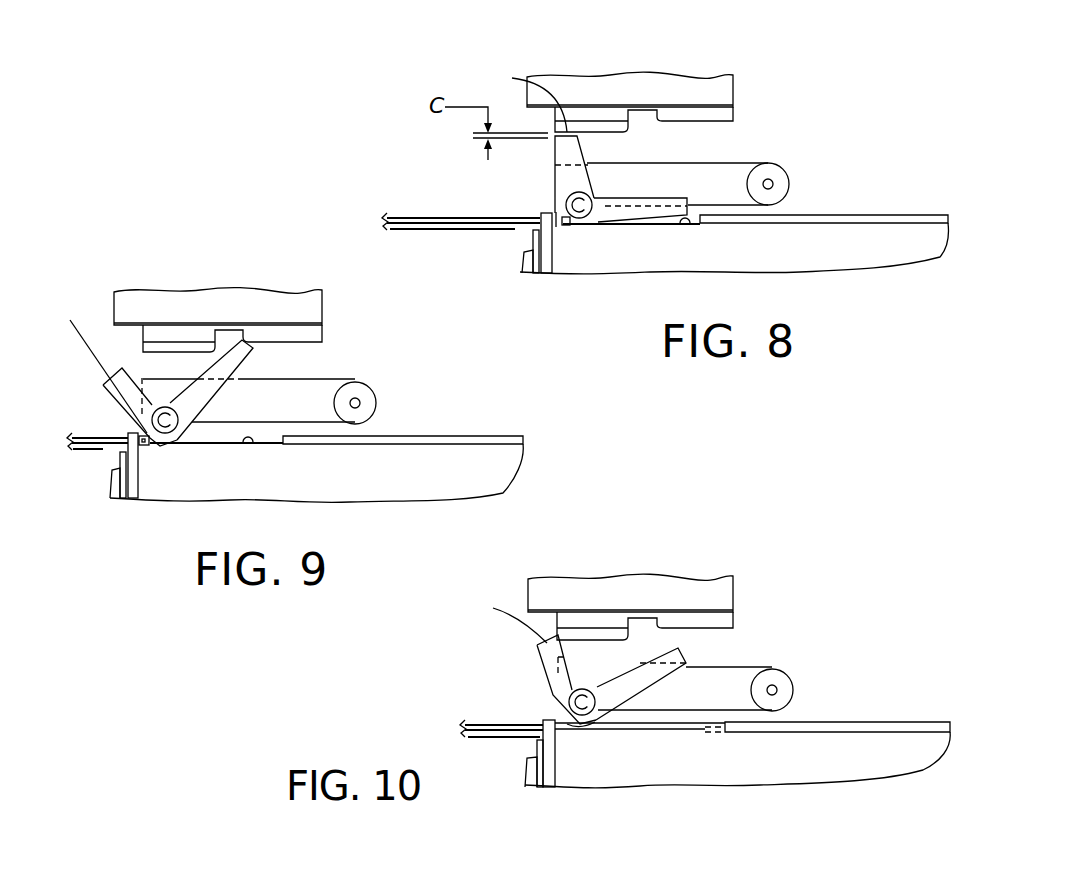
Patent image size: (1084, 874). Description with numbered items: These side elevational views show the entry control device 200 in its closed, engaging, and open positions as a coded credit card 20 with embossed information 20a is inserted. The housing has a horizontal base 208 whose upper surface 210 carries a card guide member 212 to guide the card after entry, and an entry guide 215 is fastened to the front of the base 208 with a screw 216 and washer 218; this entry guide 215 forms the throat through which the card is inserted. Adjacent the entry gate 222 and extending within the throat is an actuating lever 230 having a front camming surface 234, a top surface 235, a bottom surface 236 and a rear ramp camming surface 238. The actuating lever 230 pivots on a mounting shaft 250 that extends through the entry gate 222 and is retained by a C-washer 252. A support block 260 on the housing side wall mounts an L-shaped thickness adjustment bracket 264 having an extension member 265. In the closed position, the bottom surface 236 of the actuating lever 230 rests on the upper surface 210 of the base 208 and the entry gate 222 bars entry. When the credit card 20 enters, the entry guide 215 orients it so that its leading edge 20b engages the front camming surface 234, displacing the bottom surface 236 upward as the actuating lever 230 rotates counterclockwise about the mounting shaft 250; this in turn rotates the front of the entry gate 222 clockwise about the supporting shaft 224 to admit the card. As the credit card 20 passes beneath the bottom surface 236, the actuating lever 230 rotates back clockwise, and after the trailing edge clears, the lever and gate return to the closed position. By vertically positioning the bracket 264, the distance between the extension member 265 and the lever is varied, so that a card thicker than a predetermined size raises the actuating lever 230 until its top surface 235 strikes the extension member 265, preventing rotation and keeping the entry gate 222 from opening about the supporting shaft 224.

In FIG. 8, the coded credit card 20 is at (440, 216).
In FIG. 9, the coded credit card 20 is at (97, 437).
In FIG. 10, the coded credit card 20 is at (470, 722).
In FIG. 8, the embossed information 20a is at (462, 232).
In FIG. 9, the embossed information 20a is at (93, 455).
In FIG. 10, the embossed information 20a is at (502, 739).
In FIG. 8, the leading edge 20b is at (563, 222).
In FIG. 9, the leading edge 20b is at (155, 448).
In FIG. 10, the leading edge 20b is at (728, 730).
In FIG. 8, the entry control device 200 is at (810, 112).
In FIG. 9, the entry control device 200 is at (270, 265).
In FIG. 10, the entry control device 200 is at (803, 623).
In FIG. 8, the horizontal base 208 is at (838, 257).
In FIG. 9, the horizontal base 208 is at (400, 477).
In FIG. 10, the horizontal base 208 is at (873, 760).
In FIG. 8, the upper surface 210 is at (688, 226).
In FIG. 9, the upper surface 210 is at (254, 444).
In FIG. 10, the upper surface 210 is at (640, 726).
In FIG. 8, the card guide member 212 is at (872, 215).
In FIG. 9, the card guide member 212 is at (412, 438).
In FIG. 10, the card guide member 212 is at (877, 725).
In FIG. 8, the entry guide 215 is at (548, 274).
In FIG. 9, the entry guide 215 is at (136, 486).
In FIG. 10, the entry guide 215 is at (550, 790).
In FIG. 8, the screw 216 is at (520, 265).
In FIG. 9, the screw 216 is at (110, 495).
In FIG. 10, the screw 216 is at (523, 777).
In FIG. 8, the washer 218 is at (537, 275).
In FIG. 9, the washer 218 is at (124, 497).
In FIG. 10, the washer 218 is at (541, 789).
In FIG. 8, the entry gate 222 is at (718, 191).
In FIG. 9, the entry gate 222 is at (292, 412).
In FIG. 10, the entry gate 222 is at (738, 703).
In FIG. 8, the supporting shaft 224 is at (773, 180).
In FIG. 9, the supporting shaft 224 is at (358, 400).
In FIG. 10, the supporting shaft 224 is at (777, 688).
In FIG. 8, the actuating lever 230 is at (570, 152).
In FIG. 9, the actuating lever 230 is at (237, 350).
In FIG. 10, the actuating lever 230 is at (552, 652).
In FIG. 8, the front camming surface 234 is at (566, 228).
In FIG. 9, the front camming surface 234 is at (140, 430).
In FIG. 10, the front camming surface 234 is at (563, 717).
In FIG. 8, the top surface 235 is at (519, 98).
In FIG. 9, the top surface 235 is at (96, 365).
In FIG. 10, the top surface 235 is at (502, 617).
In FIG. 8, the bottom surface 236 is at (568, 226).
In FIG. 9, the bottom surface 236 is at (168, 446).
In FIG. 10, the bottom surface 236 is at (575, 726).
In FIG. 8, the rear ramp camming surface 238 is at (674, 228).
In FIG. 9, the rear ramp camming surface 238 is at (247, 370).
In FIG. 10, the rear ramp camming surface 238 is at (688, 668).
In FIG. 8, the mounting shaft 250 is at (583, 203).
In FIG. 9, the mounting shaft 250 is at (166, 418).
In FIG. 10, the mounting shaft 250 is at (590, 697).
In FIG. 8, the C-washer 252 is at (567, 199).
In FIG. 9, the C-washer 252 is at (155, 405).
In FIG. 10, the C-washer 252 is at (571, 693).
In FIG. 8, the support block 260 is at (600, 93).
In FIG. 9, the support block 260 is at (296, 307).
In FIG. 10, the support block 260 is at (692, 597).
In FIG. 8, the L-shaped thickness adjustment bracket 264 is at (735, 118).
In FIG. 9, the L-shaped thickness adjustment bracket 264 is at (303, 333).
In FIG. 10, the L-shaped thickness adjustment bracket 264 is at (718, 622).
In FIG. 8, the extension member 265 is at (620, 125).
In FIG. 9, the extension member 265 is at (170, 342).
In FIG. 10, the extension member 265 is at (580, 635).